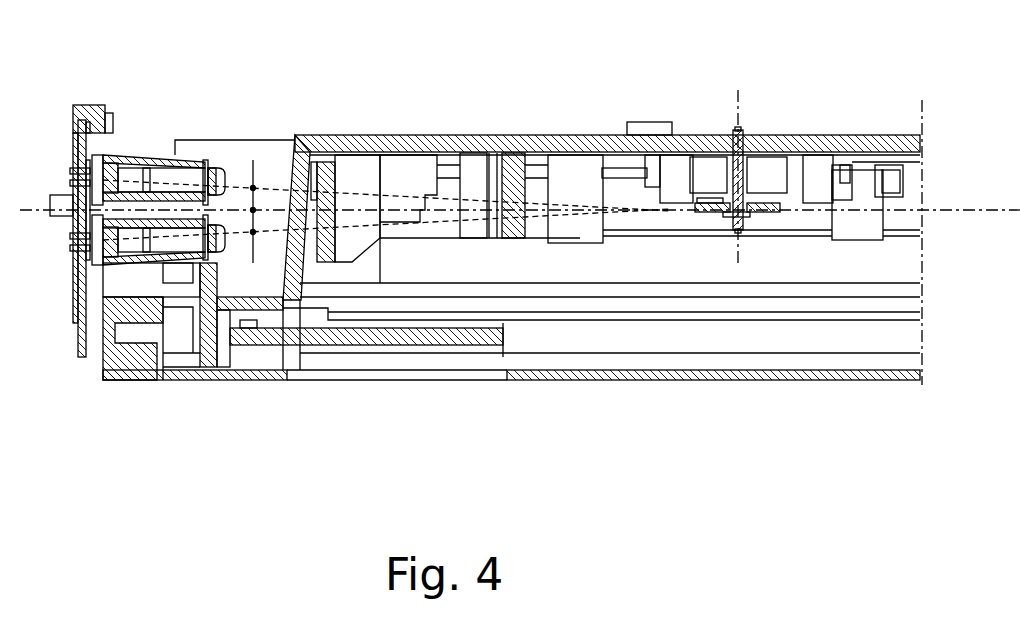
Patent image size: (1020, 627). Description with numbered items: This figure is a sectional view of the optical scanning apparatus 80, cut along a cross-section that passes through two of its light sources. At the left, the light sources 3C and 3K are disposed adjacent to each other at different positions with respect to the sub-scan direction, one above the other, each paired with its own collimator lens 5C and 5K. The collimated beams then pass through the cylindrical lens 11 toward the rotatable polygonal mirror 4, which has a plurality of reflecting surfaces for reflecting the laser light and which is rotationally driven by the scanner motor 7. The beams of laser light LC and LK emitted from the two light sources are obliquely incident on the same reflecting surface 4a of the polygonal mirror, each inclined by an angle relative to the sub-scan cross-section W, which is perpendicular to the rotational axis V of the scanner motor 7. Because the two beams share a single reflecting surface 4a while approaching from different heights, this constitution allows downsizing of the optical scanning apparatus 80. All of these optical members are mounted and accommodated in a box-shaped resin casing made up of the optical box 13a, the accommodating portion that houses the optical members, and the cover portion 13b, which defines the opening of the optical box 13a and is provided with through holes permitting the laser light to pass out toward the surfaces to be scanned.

The light source 3C is at (113, 185).
The light source 3K is at (115, 235).
The collimator lens 5C is at (230, 162).
The collimator lens 5K is at (230, 258).
The cylindrical lens 11 is at (330, 160).
The optical box 13a is at (387, 135).
The cover portion 13b is at (170, 380).
The laser light LC is at (470, 197).
The laser light LK is at (477, 223).
The rotatable polygonal mirror 4 is at (707, 197).
The reflecting surface 4a is at (695, 212).
The rotational axis V is at (738, 107).
The scanner motor 7 is at (768, 173).
The sub-scan cross-section W is at (858, 210).
The optical scanning apparatus 80 is at (780, 403).